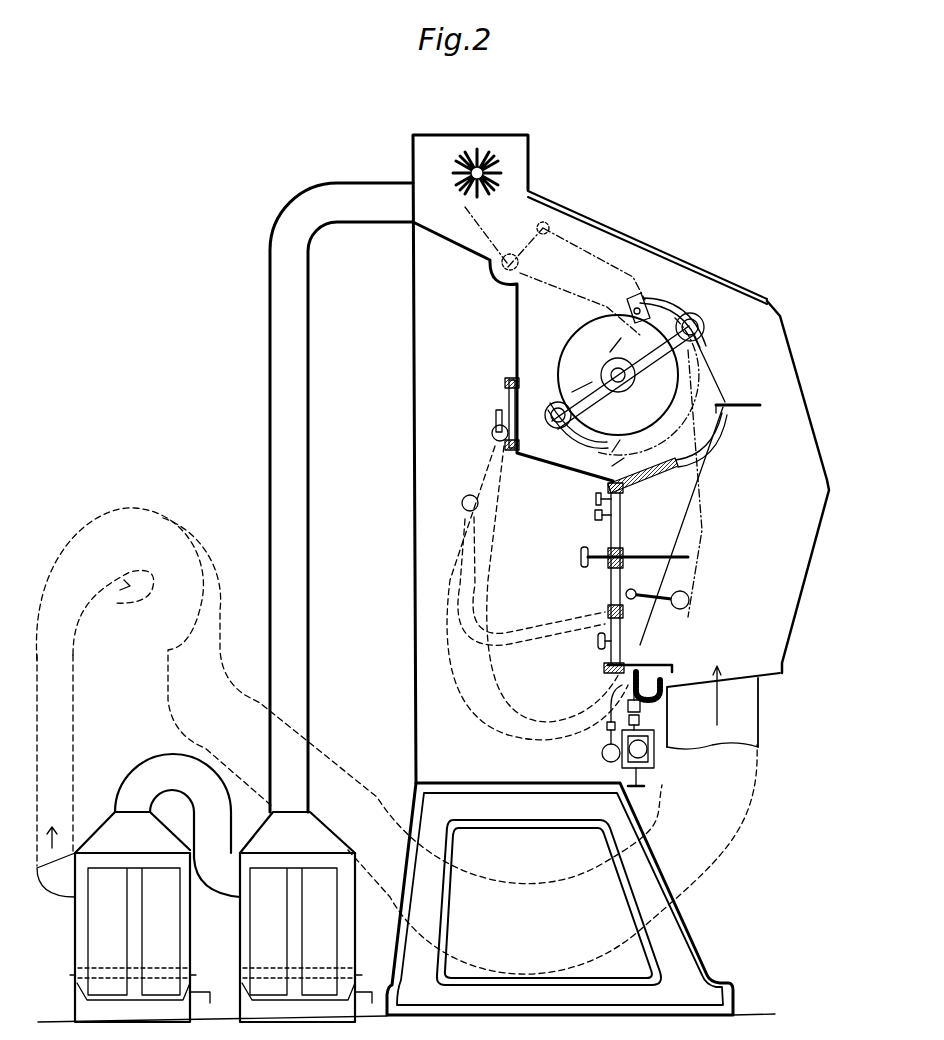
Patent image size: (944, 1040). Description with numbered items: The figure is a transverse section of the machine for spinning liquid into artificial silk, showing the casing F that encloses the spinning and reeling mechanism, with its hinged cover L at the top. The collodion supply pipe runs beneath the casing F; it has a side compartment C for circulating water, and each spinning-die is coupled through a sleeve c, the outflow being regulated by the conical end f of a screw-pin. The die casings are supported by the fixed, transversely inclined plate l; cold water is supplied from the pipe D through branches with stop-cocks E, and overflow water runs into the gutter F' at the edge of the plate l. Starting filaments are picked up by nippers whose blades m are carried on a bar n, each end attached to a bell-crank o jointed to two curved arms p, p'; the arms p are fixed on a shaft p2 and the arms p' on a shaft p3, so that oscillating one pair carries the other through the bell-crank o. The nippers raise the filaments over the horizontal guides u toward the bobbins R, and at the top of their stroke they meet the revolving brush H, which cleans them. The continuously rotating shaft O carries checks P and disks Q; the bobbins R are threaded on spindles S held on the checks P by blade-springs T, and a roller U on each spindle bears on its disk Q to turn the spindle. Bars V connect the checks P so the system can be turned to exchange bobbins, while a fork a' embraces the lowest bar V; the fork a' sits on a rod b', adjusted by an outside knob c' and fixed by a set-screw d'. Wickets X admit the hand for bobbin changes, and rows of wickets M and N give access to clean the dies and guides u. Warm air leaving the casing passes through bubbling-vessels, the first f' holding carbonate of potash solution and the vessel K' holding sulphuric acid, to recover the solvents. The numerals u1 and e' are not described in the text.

The casing F is at (784, 487).
The cover L is at (647, 247).
The revolving brush H is at (481, 180).
The knobs c' is at (555, 271).
The shaft O is at (618, 375).
The checks P is at (620, 370).
The disks Q is at (648, 386).
The bars V is at (648, 295).
The spindles S is at (613, 368).
The blade-springs T is at (627, 375).
The bobbins R is at (690, 321).
The roller U is at (554, 427).
The bracket u1 is at (718, 400).
The fork a' is at (629, 474).
The rods b' is at (614, 482).
The set-screws d' is at (620, 442).
The pin e' is at (622, 460).
The wickets M is at (625, 579).
The side compartment C is at (593, 510).
The sleeve c is at (617, 548).
The horizontal guides u is at (634, 553).
The bell-crank o is at (674, 497).
The wickets N is at (617, 627).
The nipper blades m is at (640, 659).
The bar n is at (663, 677).
The fixed plate l is at (604, 670).
The pipe D is at (622, 760).
The stop-cock E is at (602, 750).
The gutter F' is at (723, 707).
The wickets X is at (504, 414).
The shaft p3 is at (492, 433).
The shaft p2 is at (462, 505).
The curved arms p is at (537, 593).
The curved arms p' is at (531, 581).
The bubbling-vessel K' is at (204, 838).
The conical end f is at (349, 738).
The bubbling-vessel f' is at (551, 859).